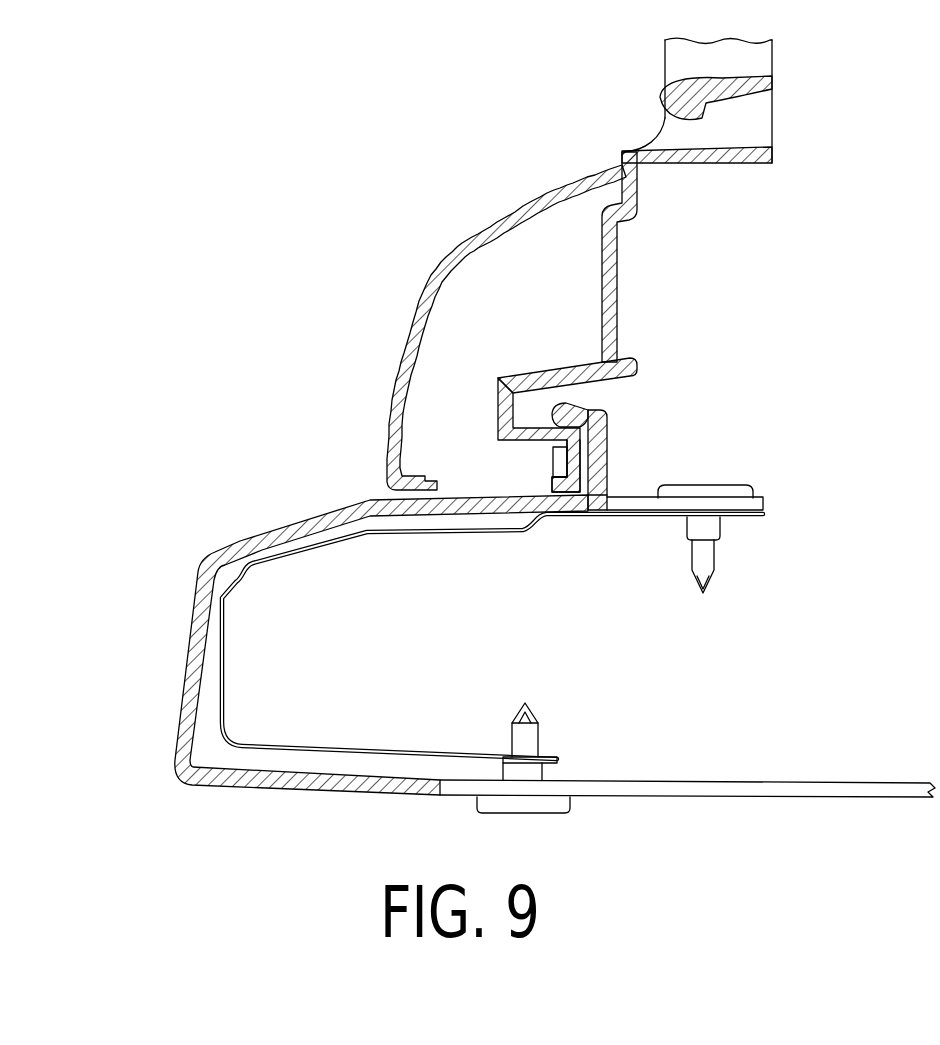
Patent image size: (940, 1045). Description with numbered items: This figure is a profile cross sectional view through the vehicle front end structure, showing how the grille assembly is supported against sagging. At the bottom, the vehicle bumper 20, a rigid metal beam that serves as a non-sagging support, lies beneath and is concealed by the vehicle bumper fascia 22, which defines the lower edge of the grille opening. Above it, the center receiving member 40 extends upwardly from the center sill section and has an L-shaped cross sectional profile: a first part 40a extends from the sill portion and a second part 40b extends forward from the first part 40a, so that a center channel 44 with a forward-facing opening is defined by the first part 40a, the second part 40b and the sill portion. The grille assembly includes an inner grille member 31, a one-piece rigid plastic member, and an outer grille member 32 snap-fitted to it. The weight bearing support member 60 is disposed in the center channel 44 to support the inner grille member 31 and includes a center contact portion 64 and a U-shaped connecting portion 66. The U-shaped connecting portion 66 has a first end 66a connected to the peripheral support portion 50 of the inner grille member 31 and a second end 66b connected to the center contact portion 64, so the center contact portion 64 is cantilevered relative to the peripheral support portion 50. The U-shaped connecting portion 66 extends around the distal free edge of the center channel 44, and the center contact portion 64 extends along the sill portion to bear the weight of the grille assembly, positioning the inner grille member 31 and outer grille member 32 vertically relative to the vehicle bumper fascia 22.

The vehicle bumper 20 is at (224, 659).
The vehicle bumper fascia 22 is at (178, 660).
The inner grille member 31 is at (784, 124).
The outer grille member 32 is at (414, 275).
The center receiving member 40 is at (668, 431).
The first part 40a is at (607, 477).
The second part 40b is at (592, 403).
The center channel 44 is at (572, 460).
The peripheral support portion 50 is at (617, 280).
The weight bearing support member 60 is at (472, 417).
The center contact portion 64 is at (588, 492).
The U-shaped connecting portion 66 is at (464, 394).
The first end 66a is at (597, 355).
The second end 66b is at (572, 458).